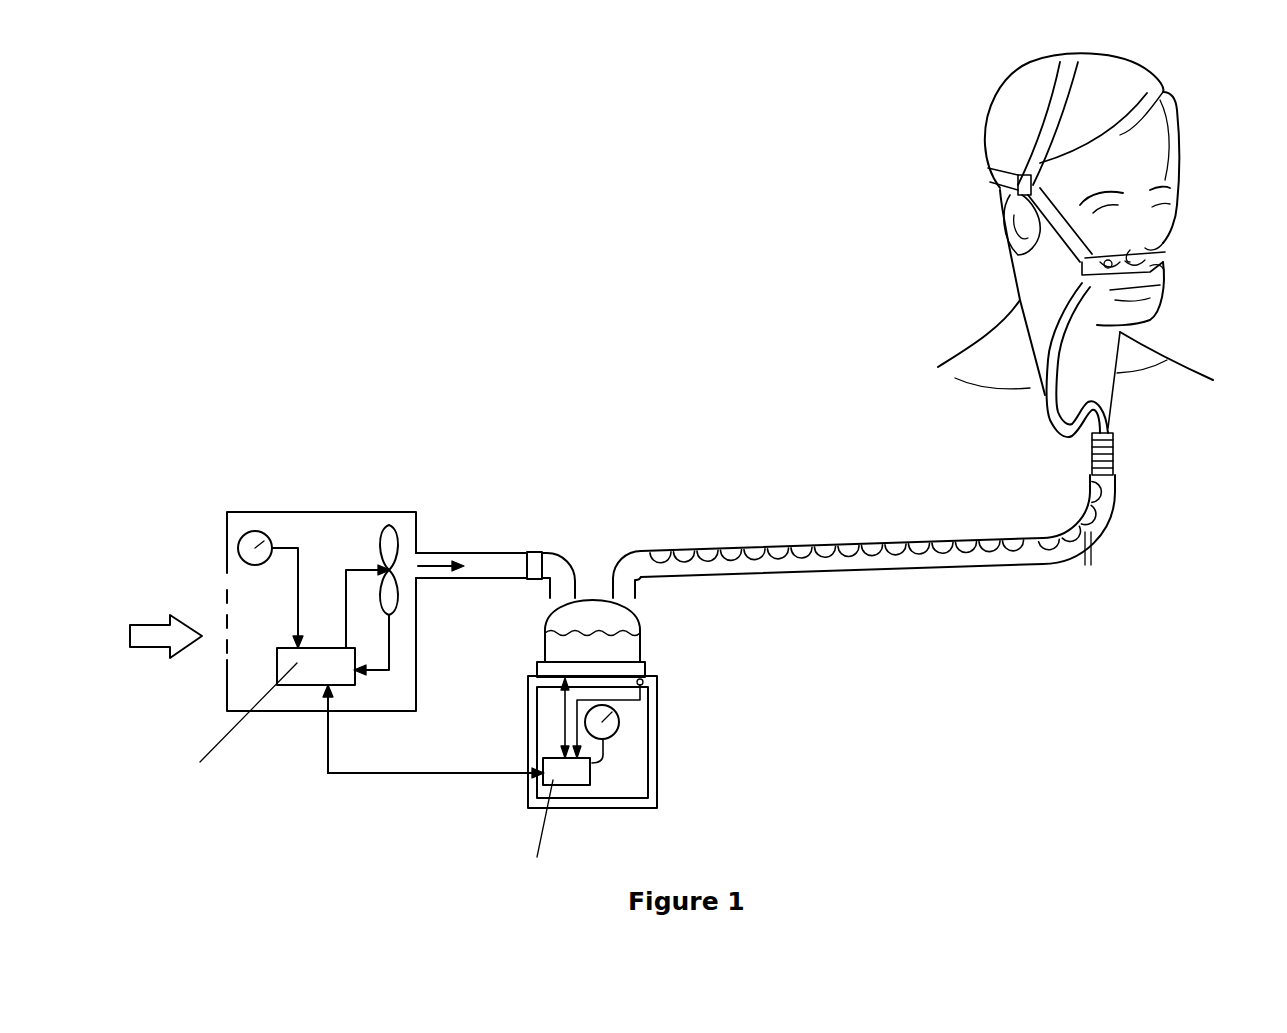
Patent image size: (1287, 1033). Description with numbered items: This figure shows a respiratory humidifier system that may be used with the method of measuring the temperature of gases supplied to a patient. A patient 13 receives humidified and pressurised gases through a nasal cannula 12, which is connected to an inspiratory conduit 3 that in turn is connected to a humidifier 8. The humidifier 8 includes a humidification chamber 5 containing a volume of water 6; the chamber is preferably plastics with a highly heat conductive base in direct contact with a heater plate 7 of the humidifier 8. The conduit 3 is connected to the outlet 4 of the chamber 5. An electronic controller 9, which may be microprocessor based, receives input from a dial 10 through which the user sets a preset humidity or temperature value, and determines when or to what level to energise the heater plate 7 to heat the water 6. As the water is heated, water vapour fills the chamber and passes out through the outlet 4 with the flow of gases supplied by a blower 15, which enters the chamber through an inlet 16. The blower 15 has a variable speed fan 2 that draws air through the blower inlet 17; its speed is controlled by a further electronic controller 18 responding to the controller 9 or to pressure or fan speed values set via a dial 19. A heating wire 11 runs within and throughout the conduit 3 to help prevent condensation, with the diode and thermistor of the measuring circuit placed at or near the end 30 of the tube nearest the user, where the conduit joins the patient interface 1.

The patient interface connection 1 is at (1122, 438).
The variable speed pump or fan 2 is at (393, 525).
The inspiratory conduit 3 is at (858, 567).
The outlet 4 is at (613, 577).
The humidification chamber 5 is at (545, 627).
The water 6 is at (592, 646).
The heater plate 7 is at (535, 672).
The humidifier 8 is at (528, 732).
The electronic controller 9 is at (540, 819).
The dial 10 is at (610, 737).
The heating element or wire 11 is at (919, 538).
The nasal cannula 12 is at (1168, 270).
The patient 13 is at (1052, 268).
The blower 15 is at (327, 512).
The inlet 16 is at (550, 597).
The blower inlet 17 is at (225, 653).
The electronic controller 18 is at (300, 685).
The dial 19 is at (256, 530).
The end 30 is at (1120, 442).